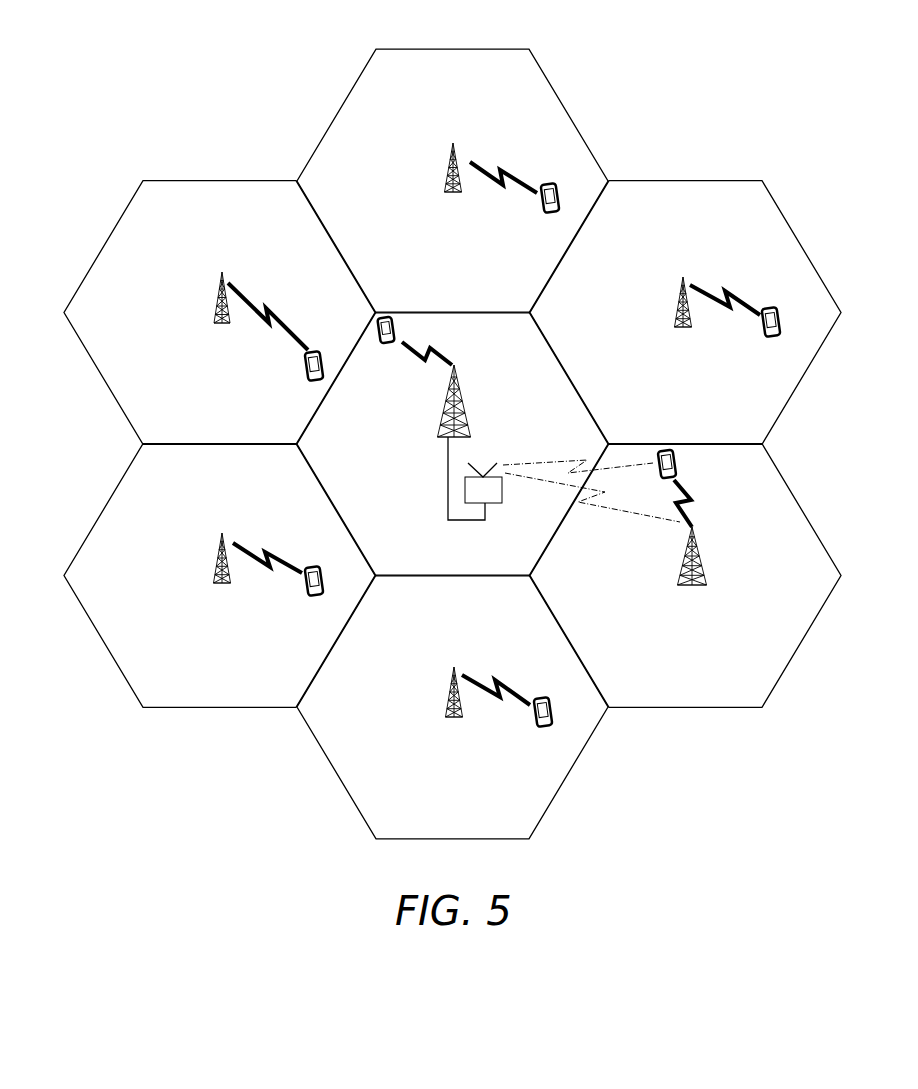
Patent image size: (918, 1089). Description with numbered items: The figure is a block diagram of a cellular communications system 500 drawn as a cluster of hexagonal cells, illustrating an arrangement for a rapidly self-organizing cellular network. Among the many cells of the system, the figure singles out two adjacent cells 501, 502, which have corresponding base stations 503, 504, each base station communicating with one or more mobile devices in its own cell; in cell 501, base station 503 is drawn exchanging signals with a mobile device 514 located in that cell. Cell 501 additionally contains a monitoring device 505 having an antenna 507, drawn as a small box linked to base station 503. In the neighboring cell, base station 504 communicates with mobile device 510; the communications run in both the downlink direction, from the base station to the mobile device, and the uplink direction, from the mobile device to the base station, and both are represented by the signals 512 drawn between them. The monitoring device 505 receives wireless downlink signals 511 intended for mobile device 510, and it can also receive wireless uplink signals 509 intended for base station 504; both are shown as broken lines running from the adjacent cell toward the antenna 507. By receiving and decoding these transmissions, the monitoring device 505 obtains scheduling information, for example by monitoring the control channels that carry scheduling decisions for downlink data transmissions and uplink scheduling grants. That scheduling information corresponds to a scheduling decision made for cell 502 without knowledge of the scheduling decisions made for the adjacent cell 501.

The cellular communications system 500 is at (300, 57).
The cell 501 is at (452, 444).
The cell 502 is at (685, 576).
The base station 503 is at (430, 401).
The base station 504 is at (690, 571).
The monitoring device 505 is at (486, 505).
The antenna 507 is at (494, 473).
The uplink signals 509 is at (578, 453).
The mobile device 510 is at (690, 462).
The downlink signals 511 is at (592, 507).
The signals 512 is at (707, 503).
The user equipment 514 is at (414, 341).